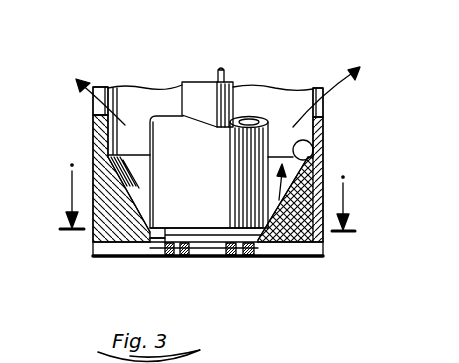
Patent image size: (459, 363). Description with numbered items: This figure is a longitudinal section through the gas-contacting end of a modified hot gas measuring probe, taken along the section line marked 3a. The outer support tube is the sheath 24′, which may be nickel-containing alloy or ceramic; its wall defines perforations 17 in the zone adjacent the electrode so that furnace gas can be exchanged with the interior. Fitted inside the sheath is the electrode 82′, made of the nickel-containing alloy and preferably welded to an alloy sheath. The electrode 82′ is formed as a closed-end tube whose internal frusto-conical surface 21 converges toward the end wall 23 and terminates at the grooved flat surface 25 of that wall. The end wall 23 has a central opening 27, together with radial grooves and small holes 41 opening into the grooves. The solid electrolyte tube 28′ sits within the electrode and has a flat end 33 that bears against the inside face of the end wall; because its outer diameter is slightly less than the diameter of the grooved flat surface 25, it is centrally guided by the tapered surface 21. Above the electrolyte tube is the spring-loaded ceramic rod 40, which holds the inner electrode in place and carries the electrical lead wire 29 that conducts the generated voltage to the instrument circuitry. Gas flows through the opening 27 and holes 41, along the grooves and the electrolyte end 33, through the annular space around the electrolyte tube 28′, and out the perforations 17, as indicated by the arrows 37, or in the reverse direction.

The perforations 17 is at (97, 108).
The frusto-conical surface 21 is at (118, 175).
The end wall 23 is at (228, 246).
The sheath 24′ is at (323, 120).
The grooved flat surface 25 is at (266, 236).
The central opening 27 is at (207, 232).
The electrolyte tube 28′ is at (259, 118).
The electrical lead wire 29 is at (224, 78).
The flat end 33 is at (202, 236).
The arrows 37 is at (366, 41).
The ceramic rod 40 is at (209, 68).
The small holes 41 is at (158, 251).
The electrode 82′ is at (303, 256).
The section line 3a is at (201, 186).